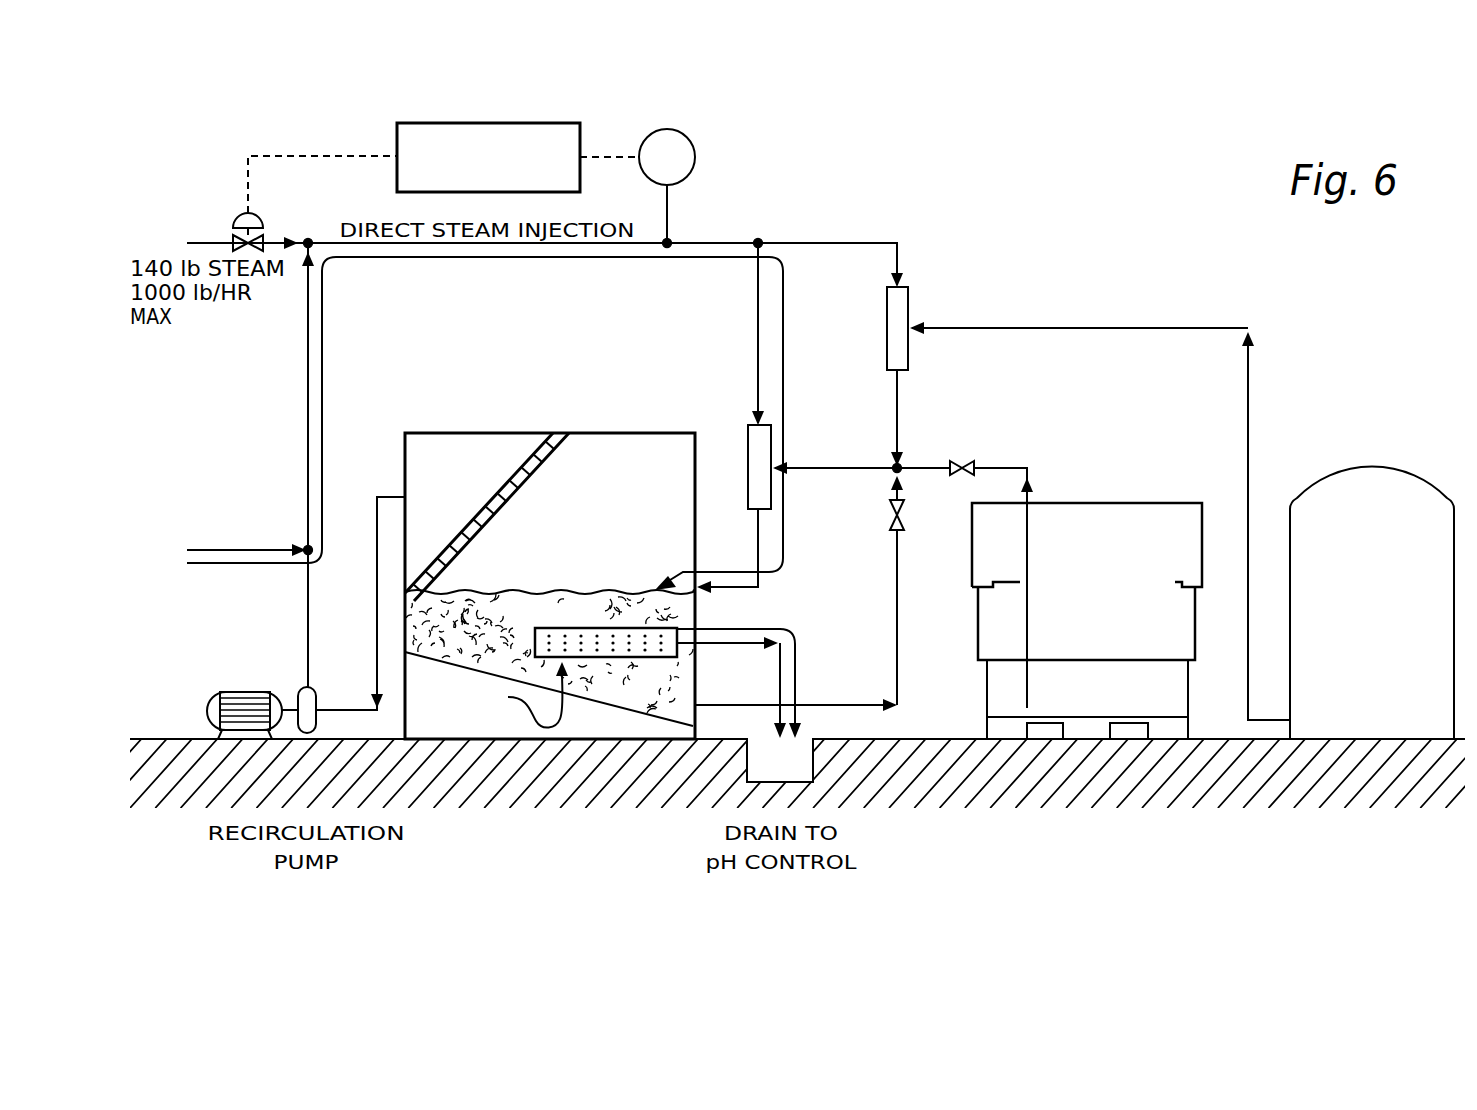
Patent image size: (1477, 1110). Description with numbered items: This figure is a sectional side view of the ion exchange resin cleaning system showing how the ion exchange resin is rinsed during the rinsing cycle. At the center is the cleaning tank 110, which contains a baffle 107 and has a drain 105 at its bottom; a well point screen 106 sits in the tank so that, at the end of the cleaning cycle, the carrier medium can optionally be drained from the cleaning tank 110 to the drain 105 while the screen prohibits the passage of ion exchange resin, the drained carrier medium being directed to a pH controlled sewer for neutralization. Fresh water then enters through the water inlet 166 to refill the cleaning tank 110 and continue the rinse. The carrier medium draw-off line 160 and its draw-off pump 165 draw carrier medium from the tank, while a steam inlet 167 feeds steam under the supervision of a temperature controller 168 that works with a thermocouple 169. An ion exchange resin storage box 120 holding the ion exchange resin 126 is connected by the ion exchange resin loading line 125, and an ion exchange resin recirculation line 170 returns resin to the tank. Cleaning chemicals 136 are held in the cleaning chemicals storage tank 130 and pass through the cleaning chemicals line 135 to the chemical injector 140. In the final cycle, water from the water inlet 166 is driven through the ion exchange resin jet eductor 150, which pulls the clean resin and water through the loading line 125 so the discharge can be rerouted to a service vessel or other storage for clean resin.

The drain 105 is at (783, 663).
The well point screen 106 is at (658, 657).
The baffle 107 is at (505, 483).
The cleaning tank 110 is at (427, 445).
The ion exchange resin storage box 120 is at (1074, 514).
The ion exchange resin loading line 125 is at (995, 462).
The ion exchange resin 126 is at (1115, 702).
The cleaning chemicals storage tank 130 is at (1364, 484).
The cleaning chemicals line 135 is at (1248, 391).
The cleaning chemicals 136 is at (1402, 683).
The chemical injector 140 is at (887, 332).
The ion exchange resin jet eductor 150 is at (771, 446).
The carrier medium draw-off line 160 is at (308, 414).
The draw-off pump 165 is at (236, 689).
The water inlet 166 is at (192, 550).
The steam inlet 167 is at (202, 242).
The temperature controller 168 is at (548, 123).
The thermocouple 169 is at (695, 157).
The ion exchange resin recirculation line 170 is at (898, 668).